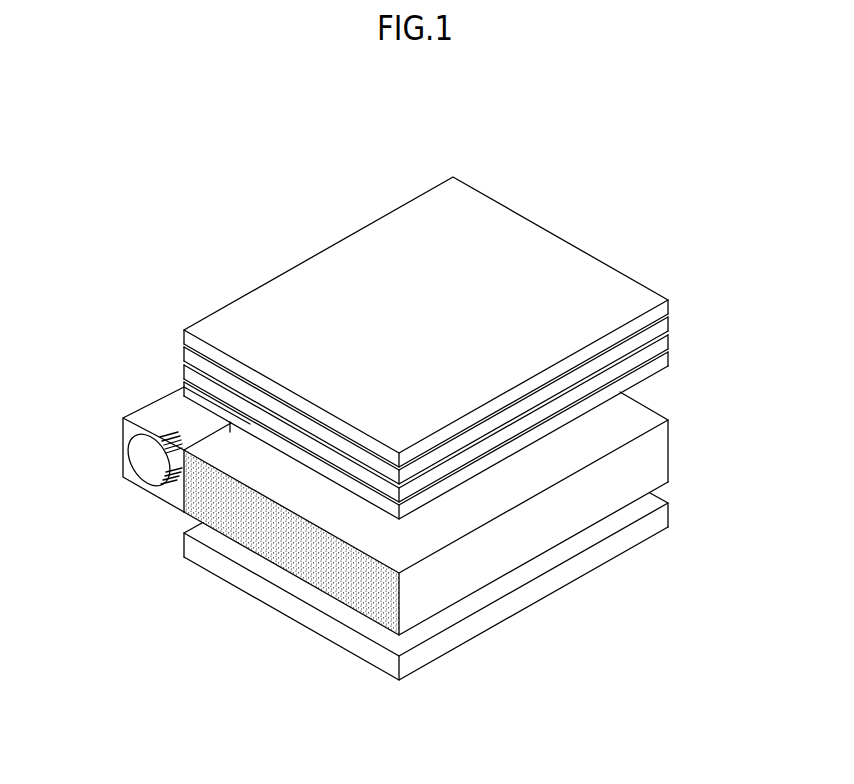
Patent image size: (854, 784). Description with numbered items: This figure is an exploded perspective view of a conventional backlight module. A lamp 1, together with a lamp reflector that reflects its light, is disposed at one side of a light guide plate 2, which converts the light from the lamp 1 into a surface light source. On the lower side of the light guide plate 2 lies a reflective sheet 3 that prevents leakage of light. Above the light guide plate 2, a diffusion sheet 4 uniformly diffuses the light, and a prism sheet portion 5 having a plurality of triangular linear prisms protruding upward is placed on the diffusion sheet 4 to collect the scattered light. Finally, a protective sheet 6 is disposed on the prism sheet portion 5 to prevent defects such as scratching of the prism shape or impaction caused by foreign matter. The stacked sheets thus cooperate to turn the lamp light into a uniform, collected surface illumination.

The lamp 1 is at (145, 458).
The light guide plate 2 is at (195, 497).
The reflective sheet 3 is at (213, 560).
The diffusion sheet 4 is at (183, 389).
The prism sheet portion 5 is at (183, 349).
The protective sheet 6 is at (183, 331).